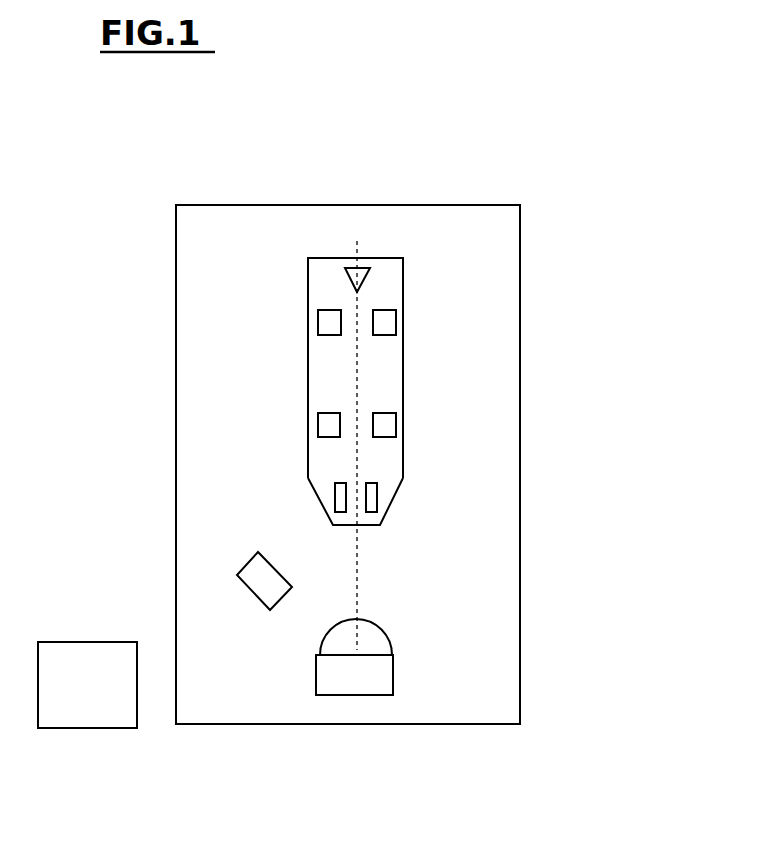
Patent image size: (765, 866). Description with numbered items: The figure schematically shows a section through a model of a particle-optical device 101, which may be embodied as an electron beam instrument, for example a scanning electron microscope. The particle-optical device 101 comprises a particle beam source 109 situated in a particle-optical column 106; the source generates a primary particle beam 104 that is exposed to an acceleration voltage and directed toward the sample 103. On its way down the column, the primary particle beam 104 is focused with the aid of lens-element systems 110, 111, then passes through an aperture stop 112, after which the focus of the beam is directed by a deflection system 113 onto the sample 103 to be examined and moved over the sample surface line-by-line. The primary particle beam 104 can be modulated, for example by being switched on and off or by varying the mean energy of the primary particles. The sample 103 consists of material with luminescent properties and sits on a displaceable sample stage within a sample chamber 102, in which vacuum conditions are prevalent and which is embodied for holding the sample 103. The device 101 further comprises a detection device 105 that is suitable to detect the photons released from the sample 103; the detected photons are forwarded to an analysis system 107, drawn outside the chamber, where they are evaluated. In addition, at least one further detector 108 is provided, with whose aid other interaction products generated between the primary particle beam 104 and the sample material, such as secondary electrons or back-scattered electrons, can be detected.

The particle-optical device 101 is at (491, 160).
The sample chamber 102 is at (460, 280).
The sample 103 is at (366, 684).
The primary particle beam 104 is at (390, 452).
The detection device 105 is at (376, 622).
The particle-optical column 106 is at (390, 368).
The analysis system 107 is at (100, 660).
The further detector 108 is at (245, 562).
The particle beam source 109 is at (365, 277).
The lens-element system 110 is at (385, 320).
The lens-element system 111 is at (385, 422).
The aperture stop 112 is at (338, 470).
The deflection system 113 is at (375, 506).